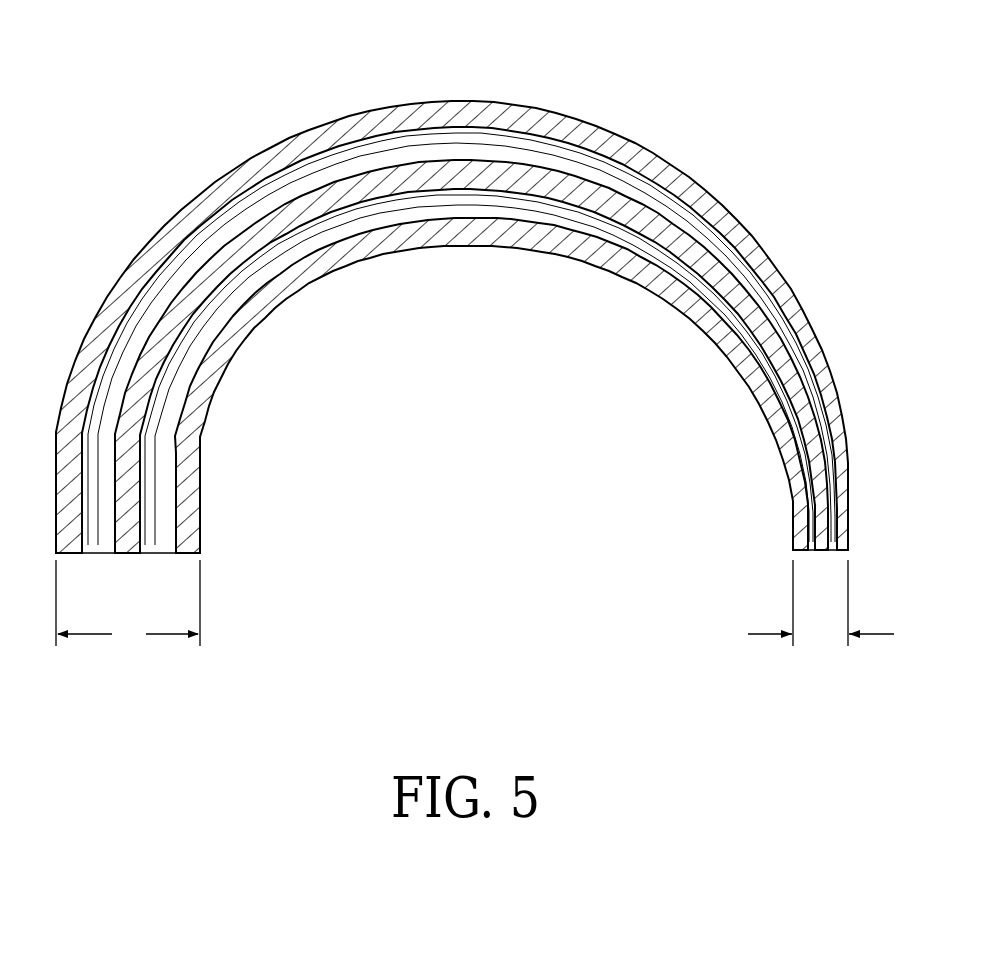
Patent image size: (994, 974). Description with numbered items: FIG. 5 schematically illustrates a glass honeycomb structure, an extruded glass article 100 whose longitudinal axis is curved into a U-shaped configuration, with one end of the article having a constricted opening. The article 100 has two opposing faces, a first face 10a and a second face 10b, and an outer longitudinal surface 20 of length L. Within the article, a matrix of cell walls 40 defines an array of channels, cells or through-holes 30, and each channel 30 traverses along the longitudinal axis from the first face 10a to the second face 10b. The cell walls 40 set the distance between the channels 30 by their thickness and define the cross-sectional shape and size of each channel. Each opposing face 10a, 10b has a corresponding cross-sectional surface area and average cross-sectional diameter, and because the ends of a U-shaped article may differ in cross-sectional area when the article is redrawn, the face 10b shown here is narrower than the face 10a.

The extruded glass article 100 is at (475, 347).
The outer longitudinal surface 20 is at (452, 308).
The channels 30 is at (306, 187).
The cell walls 40 is at (212, 200).
The first face 10a is at (165, 554).
The second face 10b is at (812, 552).